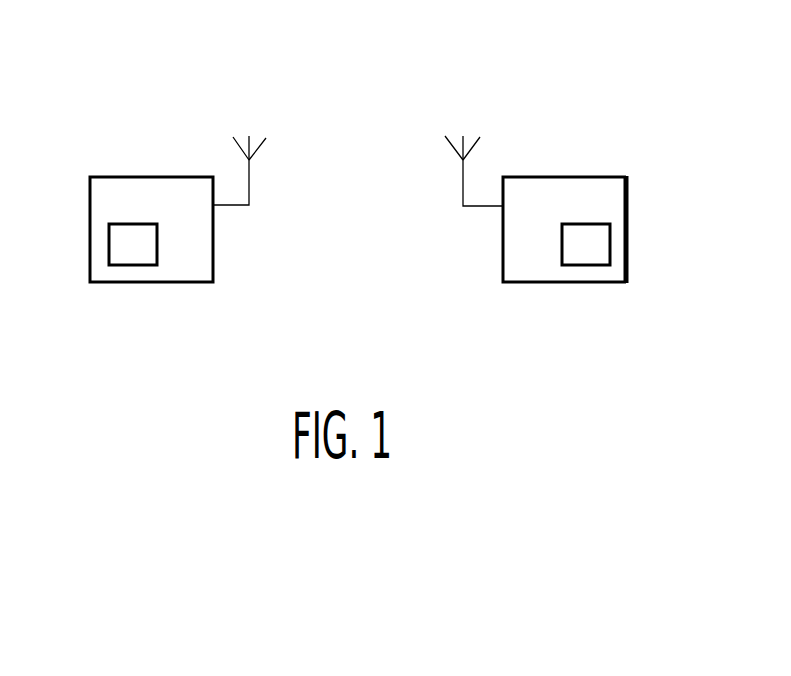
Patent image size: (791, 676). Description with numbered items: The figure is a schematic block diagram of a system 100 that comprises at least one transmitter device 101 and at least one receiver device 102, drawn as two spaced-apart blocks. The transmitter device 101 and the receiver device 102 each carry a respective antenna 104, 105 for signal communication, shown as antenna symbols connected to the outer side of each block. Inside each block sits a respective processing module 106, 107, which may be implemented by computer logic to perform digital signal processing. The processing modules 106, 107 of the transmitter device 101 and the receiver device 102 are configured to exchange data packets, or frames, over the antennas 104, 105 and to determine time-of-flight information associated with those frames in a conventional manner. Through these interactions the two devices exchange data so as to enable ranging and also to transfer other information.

The system 100 is at (382, 100).
The transmitter device 101 is at (124, 188).
The receiver device 102 is at (595, 190).
The antenna 104 is at (252, 138).
The antenna 105 is at (475, 140).
The processing module 106 is at (133, 253).
The processing module 107 is at (587, 252).